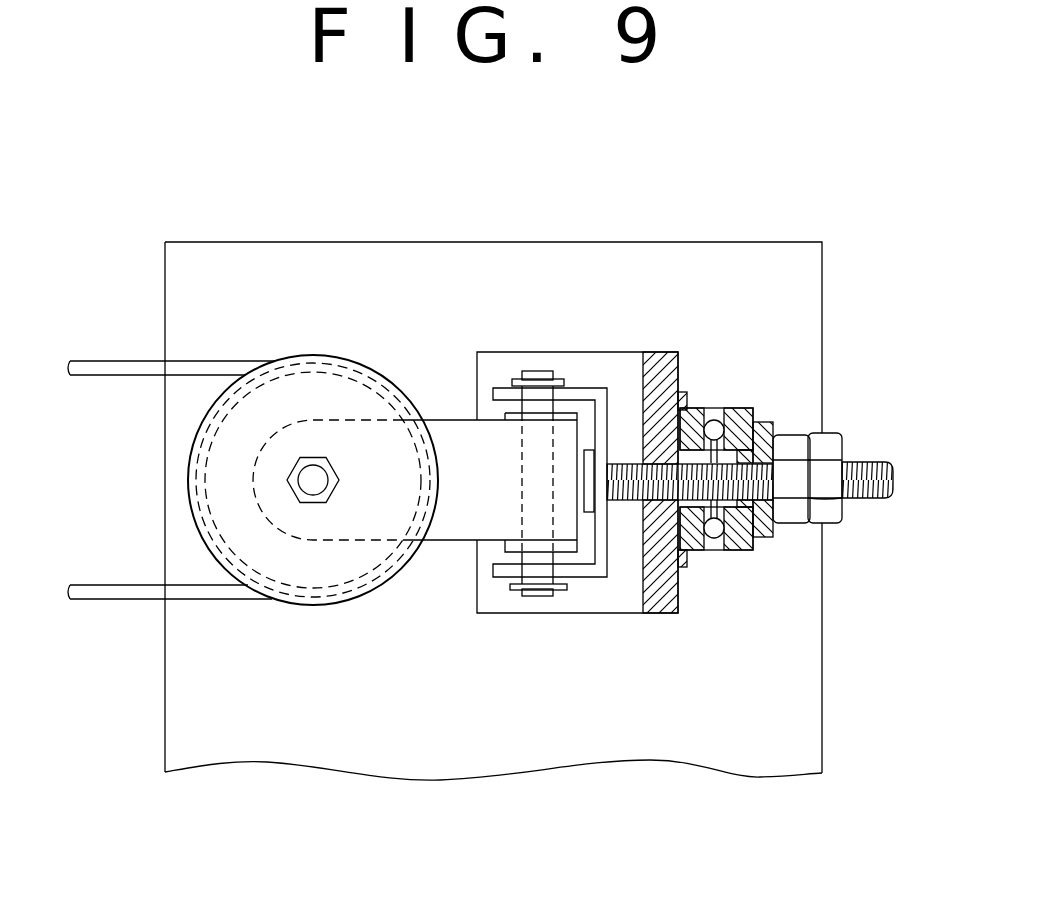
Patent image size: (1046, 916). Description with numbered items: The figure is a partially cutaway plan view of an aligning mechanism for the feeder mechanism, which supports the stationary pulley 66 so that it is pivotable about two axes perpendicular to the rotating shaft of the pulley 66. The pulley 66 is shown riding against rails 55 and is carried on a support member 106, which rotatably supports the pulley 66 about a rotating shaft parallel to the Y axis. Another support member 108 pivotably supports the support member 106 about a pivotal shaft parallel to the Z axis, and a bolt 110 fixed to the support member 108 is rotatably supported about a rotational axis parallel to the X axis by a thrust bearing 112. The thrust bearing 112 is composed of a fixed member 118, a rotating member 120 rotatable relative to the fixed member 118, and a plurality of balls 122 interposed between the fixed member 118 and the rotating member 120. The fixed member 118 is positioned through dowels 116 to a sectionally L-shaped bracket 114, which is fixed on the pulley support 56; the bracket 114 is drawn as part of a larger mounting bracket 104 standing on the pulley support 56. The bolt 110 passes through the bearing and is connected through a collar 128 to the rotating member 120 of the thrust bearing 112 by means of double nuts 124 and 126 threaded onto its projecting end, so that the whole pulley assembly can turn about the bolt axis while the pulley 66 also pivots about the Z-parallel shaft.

The rail 55 is at (121, 362).
The pulley support 56 is at (410, 243).
The stationary pulley 66 is at (334, 356).
The bracket 104 is at (514, 343).
The support member 106 is at (447, 432).
The support member 108 is at (582, 572).
The bolt 110 is at (635, 500).
The thrust bearing 112 is at (705, 392).
The sectionally L-shaped bracket 114 is at (648, 372).
The dowels 116 is at (684, 393).
The fixed member 118 is at (703, 552).
The rotating member 120 is at (755, 422).
The balls 122 is at (716, 420).
The nut 124 is at (792, 516).
The nut 126 is at (832, 446).
The collar 128 is at (775, 420).